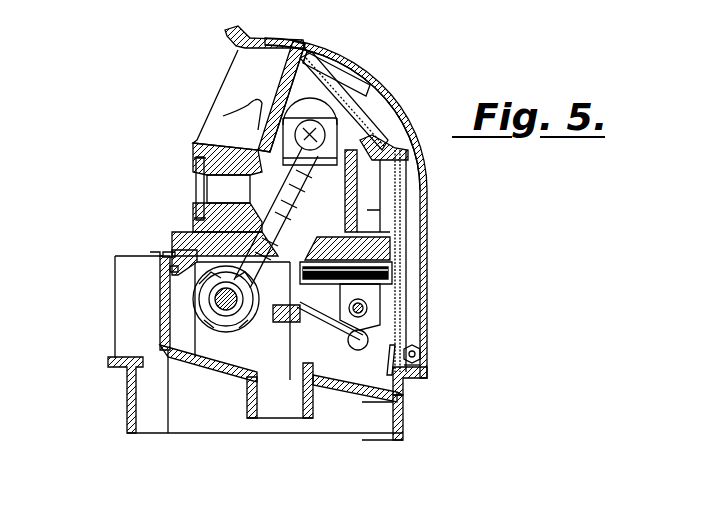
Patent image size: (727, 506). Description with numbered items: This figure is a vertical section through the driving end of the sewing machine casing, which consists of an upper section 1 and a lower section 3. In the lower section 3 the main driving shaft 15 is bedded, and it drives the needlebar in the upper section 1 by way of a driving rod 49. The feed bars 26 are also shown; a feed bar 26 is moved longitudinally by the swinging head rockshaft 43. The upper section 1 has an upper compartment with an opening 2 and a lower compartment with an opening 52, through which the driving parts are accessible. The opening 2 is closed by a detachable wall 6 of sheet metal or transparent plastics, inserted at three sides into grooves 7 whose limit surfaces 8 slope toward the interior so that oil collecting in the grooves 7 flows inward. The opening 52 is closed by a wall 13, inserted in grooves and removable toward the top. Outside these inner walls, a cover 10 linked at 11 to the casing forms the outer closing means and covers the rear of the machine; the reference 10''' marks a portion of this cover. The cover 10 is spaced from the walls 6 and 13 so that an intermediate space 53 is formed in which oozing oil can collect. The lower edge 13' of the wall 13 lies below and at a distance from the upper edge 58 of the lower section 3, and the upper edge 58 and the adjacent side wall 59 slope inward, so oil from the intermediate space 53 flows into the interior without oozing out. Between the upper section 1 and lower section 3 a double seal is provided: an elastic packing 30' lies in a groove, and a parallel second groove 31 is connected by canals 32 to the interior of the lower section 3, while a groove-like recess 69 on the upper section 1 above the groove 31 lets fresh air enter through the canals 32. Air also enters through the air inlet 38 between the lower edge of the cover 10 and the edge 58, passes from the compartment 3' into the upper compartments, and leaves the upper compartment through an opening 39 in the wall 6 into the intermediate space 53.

The upper section of the casing 1 is at (247, 88).
The opening 2 is at (352, 120).
The lower section of the casing 3 is at (293, 394).
The compartment of the lower section 3' is at (311, 382).
The detachable wall 6 is at (370, 80).
The grooves 7 is at (287, 60).
The limit surfaces 8 is at (300, 78).
The cover 10 is at (358, 208).
The cover inner surface 10''' is at (370, 107).
The hinge link 11 is at (423, 350).
The wall 13 is at (393, 260).
The lower edge of the wall 13' is at (334, 342).
The main driving shaft 15 is at (224, 332).
The feed bars 26 is at (335, 271).
The elastic packing 30' is at (202, 261).
The second groove 31 is at (158, 257).
The canals 32 is at (163, 275).
The air inlet 38 is at (423, 366).
The opening 39 is at (320, 73).
The swinging head rockshaft 43 is at (372, 307).
The driving rod 49 is at (273, 213).
The opening 52 is at (400, 295).
The intermediate space 53 is at (413, 223).
The upper edge of the lower section 58 is at (421, 368).
The side wall of the lower section 59 is at (408, 384).
The groove-like recess 69 is at (165, 253).